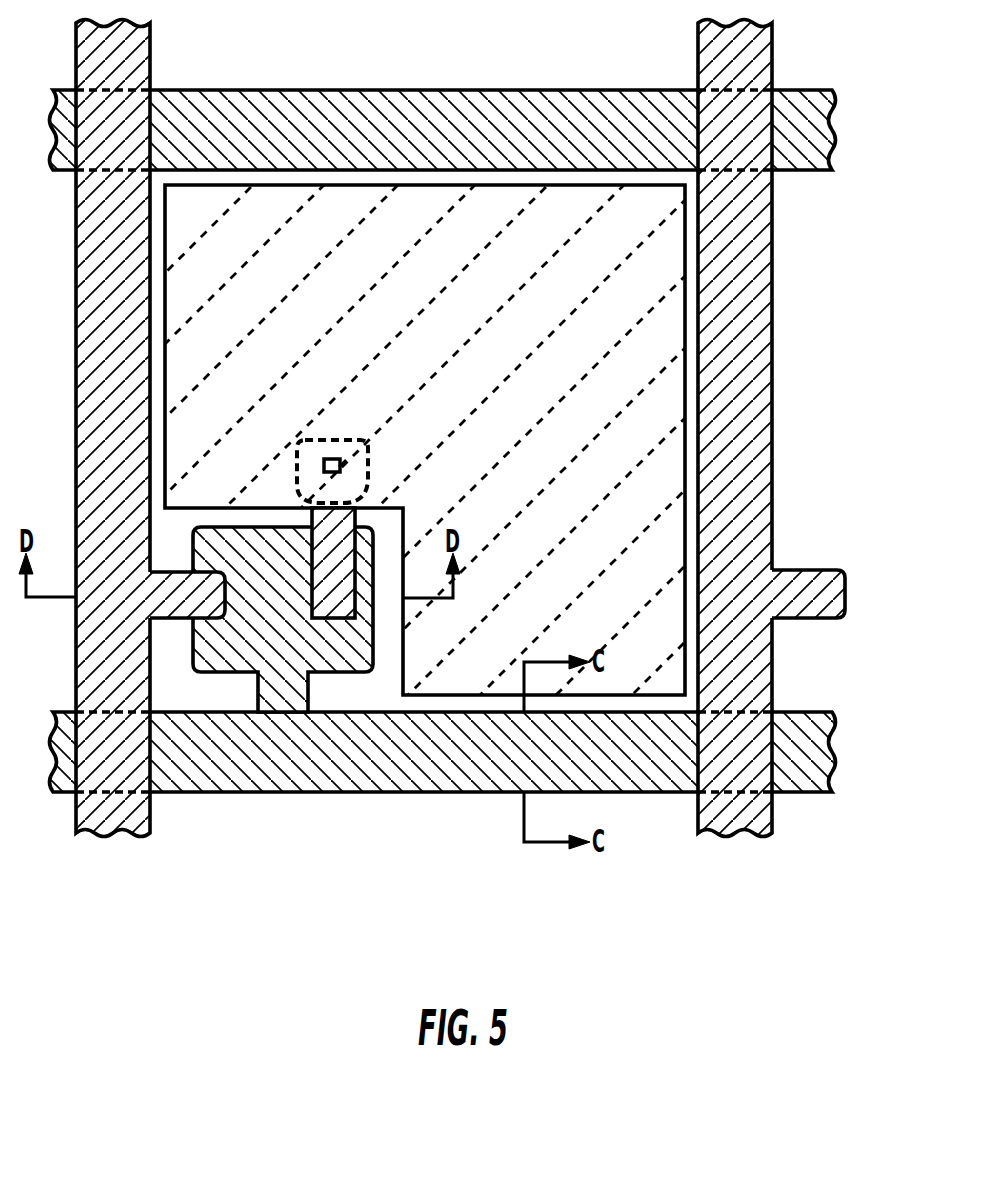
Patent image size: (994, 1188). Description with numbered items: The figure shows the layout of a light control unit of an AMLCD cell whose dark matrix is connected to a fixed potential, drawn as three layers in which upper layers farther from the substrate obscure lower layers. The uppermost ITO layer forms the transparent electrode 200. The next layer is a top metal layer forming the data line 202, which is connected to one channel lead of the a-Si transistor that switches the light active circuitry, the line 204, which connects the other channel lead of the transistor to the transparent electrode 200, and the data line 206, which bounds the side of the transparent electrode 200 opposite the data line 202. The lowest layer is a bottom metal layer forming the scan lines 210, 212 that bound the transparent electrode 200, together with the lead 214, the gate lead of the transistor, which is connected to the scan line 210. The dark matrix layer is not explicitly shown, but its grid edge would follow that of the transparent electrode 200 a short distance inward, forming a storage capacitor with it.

The transparent electrode 200 is at (472, 208).
The data line 202 is at (105, 835).
The line 204 is at (343, 543).
The data line 206 is at (747, 834).
The scan line 210 is at (315, 793).
The scan line 212 is at (318, 90).
The lead 214 is at (266, 527).